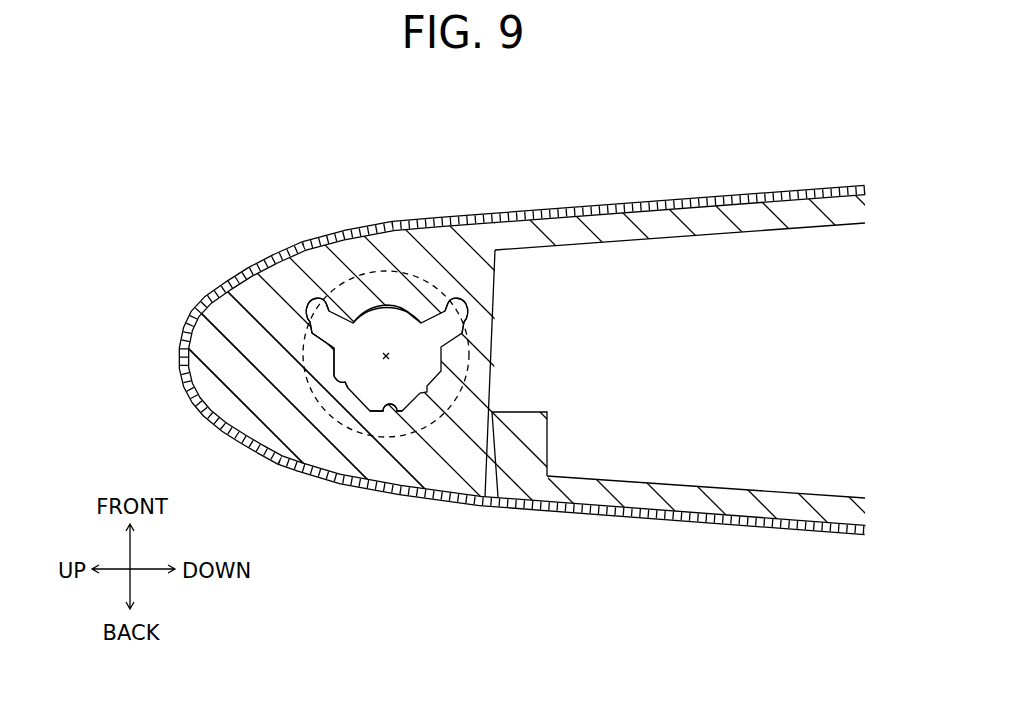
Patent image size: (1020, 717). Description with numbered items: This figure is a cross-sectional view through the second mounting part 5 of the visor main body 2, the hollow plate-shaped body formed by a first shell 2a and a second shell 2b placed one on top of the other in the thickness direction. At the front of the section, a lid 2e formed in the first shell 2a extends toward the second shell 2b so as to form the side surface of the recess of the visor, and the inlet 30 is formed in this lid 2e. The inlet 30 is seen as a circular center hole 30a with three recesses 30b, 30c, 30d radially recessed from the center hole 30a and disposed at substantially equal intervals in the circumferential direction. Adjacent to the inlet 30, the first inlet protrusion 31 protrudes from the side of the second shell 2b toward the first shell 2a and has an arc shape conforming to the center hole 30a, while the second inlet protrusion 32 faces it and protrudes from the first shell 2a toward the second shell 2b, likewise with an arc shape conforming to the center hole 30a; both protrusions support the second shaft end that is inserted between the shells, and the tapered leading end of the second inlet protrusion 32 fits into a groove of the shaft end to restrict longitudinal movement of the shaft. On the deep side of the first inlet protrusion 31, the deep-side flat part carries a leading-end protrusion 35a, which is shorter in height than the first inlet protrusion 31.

The visor main body 2 is at (625, 183).
The first shell 2a is at (562, 208).
The second shell 2b is at (643, 502).
The lid 2e is at (250, 297).
The second mounting part 5 is at (352, 208).
The inlet 30 is at (386, 352).
The center hole 30a is at (336, 364).
The recess 30b is at (399, 414).
The recess 30c is at (309, 300).
The recess 30d is at (441, 302).
The first inlet protrusion 31 is at (367, 437).
The second inlet protrusion 32 is at (407, 300).
The leading-end protrusion 35a is at (523, 437).